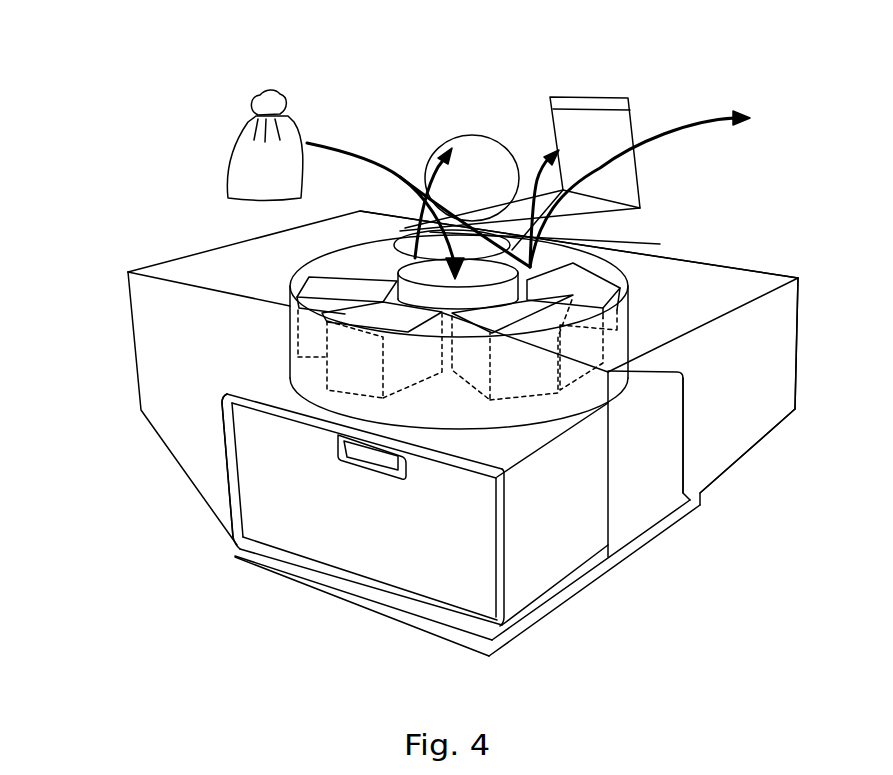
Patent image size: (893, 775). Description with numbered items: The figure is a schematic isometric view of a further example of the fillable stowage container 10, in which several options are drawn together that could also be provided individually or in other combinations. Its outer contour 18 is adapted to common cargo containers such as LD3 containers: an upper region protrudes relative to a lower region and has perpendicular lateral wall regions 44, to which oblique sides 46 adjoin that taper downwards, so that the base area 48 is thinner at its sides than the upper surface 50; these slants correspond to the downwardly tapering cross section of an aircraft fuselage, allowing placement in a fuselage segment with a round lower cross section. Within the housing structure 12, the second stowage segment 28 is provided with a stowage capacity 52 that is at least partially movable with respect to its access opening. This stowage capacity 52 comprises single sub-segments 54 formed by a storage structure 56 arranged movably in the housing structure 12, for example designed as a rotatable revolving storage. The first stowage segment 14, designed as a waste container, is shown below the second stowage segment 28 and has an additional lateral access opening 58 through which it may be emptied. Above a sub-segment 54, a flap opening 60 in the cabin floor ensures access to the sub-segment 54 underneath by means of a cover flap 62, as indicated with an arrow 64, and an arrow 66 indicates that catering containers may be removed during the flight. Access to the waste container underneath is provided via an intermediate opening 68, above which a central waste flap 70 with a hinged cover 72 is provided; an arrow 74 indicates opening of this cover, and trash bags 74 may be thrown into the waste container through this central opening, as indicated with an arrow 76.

The fillable stowage container 10 is at (112, 372).
The housing structure 12 is at (168, 458).
The first stowage segment 14 is at (643, 480).
The outer contour 18 is at (816, 327).
The second stowage segment 28 is at (651, 281).
The lateral wall regions 44 is at (773, 412).
The oblique sides 46 is at (558, 583).
The base area 48 is at (440, 623).
The upper surface 50 is at (745, 268).
The stowage capacity 52 is at (617, 327).
The sub-segments 54 is at (333, 288).
The storage structure 56 is at (310, 333).
The lateral access opening 58 is at (227, 475).
The flap opening 60 is at (656, 178).
The cover flap 62 is at (632, 118).
The arrow 64 is at (545, 156).
The arrow 66 is at (710, 114).
The intermediate opening 68 is at (421, 250).
The central waste flap 70 is at (434, 116).
The hinged cover 72 is at (480, 137).
The arrow / trash bags 74 is at (233, 133).
The arrow 76 is at (327, 143).